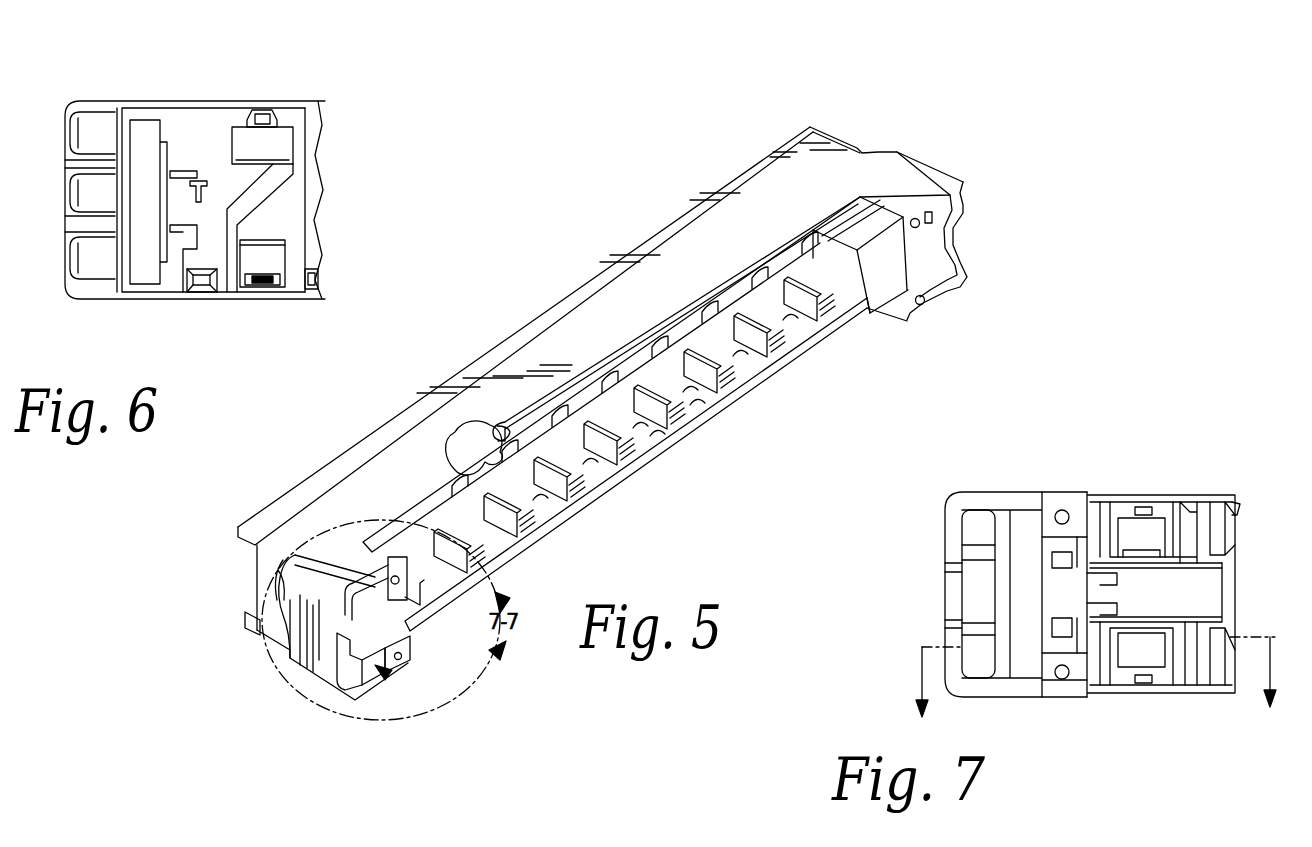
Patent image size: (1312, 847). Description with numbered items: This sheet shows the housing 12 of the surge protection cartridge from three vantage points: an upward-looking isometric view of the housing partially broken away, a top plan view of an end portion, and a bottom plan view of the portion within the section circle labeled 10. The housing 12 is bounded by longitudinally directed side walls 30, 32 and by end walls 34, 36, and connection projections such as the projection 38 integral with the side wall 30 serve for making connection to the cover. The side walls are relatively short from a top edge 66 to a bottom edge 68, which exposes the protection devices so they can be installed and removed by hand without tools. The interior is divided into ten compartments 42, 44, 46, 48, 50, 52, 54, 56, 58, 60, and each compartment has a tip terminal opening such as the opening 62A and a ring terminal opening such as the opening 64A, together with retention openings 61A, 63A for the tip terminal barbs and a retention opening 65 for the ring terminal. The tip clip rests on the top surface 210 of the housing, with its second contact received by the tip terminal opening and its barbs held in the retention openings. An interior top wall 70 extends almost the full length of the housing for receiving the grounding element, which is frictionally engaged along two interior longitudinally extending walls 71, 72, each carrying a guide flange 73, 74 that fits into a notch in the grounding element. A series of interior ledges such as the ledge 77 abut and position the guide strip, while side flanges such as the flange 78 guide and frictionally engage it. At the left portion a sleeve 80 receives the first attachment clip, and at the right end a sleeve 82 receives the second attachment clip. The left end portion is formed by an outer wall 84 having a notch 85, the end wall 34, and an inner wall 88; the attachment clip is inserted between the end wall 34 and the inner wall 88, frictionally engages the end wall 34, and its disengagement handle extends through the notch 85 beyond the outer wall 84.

In FIG. 7, the section line 10- 10 is at (1095, 688).
In FIG. 5, the housing 12 is at (636, 228).
In FIG. 6, the side wall 30 is at (143, 300).
In FIG. 5, the side wall 30 is at (570, 316).
In FIG. 7, the side wall 30 is at (1096, 490).
In FIG. 6, the side wall 32 is at (205, 101).
In FIG. 5, the side wall 32 is at (597, 465).
In FIG. 7, the side wall 32 is at (1115, 690).
In FIG. 6, the end wall 34 is at (80, 188).
In FIG. 5, the end wall 34 is at (300, 662).
In FIG. 7, the end wall 34 is at (1000, 597).
In FIG. 5, the end wall 36 is at (845, 143).
In FIG. 5, the connection projection 38 is at (627, 347).
In FIG. 5, the compartment 42 is at (403, 613).
In FIG. 7, the compartment 42 is at (1215, 672).
In FIG. 5, the compartment 44 is at (441, 590).
In FIG. 7, the compartment 44 is at (1222, 535).
In FIG. 5, the compartment 46 is at (500, 537).
In FIG. 5, the compartment 48 is at (544, 502).
In FIG. 5, the compartment 50 is at (592, 458).
In FIG. 5, the compartment 52 is at (645, 430).
In FIG. 5, the compartment 54 is at (712, 400).
In FIG. 5, the compartment 56 is at (745, 370).
In FIG. 5, the compartment 58 is at (800, 330).
In FIG. 5, the compartment 60 is at (838, 302).
In FIG. 6, the retention opening 61A is at (262, 112).
In FIG. 7, the retention opening 61A is at (1145, 683).
In FIG. 6, the tip terminal opening 62A is at (243, 145).
In FIG. 7, the tip terminal opening 62A is at (1120, 652).
In FIG. 6, the retention opening 63A is at (197, 294).
In FIG. 7, the retention opening 63A is at (1143, 505).
In FIG. 6, the ring terminal opening 64A is at (233, 300).
In FIG. 7, the ring terminal opening 64A is at (1153, 530).
In FIG. 6, the retention opening 65 is at (254, 292).
In FIG. 6, the top edge 66 is at (293, 106).
In FIG. 5, the top edge 66 is at (455, 358).
In FIG. 5, the bottom edge 68 is at (728, 300).
In FIG. 7, the bottom edge 68 is at (1180, 690).
In FIG. 7, the interior top wall 70 is at (1230, 604).
In FIG. 5, the interior longitudinally extending wall 71 is at (778, 270).
In FIG. 7, the interior longitudinally extending wall 71 is at (1090, 618).
In FIG. 5, the interior longitudinally extending wall 72 is at (504, 425).
In FIG. 7, the interior longitudinally extending wall 72 is at (1120, 576).
In FIG. 5, the guide flange 73 is at (685, 325).
In FIG. 5, the guide flange 74 is at (462, 478).
In FIG. 5, the interior ledge 77 is at (665, 440).
In FIG. 5, the side flange 78 is at (692, 408).
In FIG. 5, the sleeve 80 is at (392, 675).
In FIG. 5, the sleeve 82 is at (922, 268).
In FIG. 6, the outer wall 84 is at (67, 141).
In FIG. 5, the outer wall 84 is at (295, 650).
In FIG. 7, the outer wall 84 is at (950, 583).
In FIG. 5, the notch 85 is at (340, 650).
In FIG. 5, the inner wall 88 is at (383, 590).
In FIG. 7, the inner wall 88 is at (1044, 656).
In FIG. 6, the top surface 210 is at (208, 162).